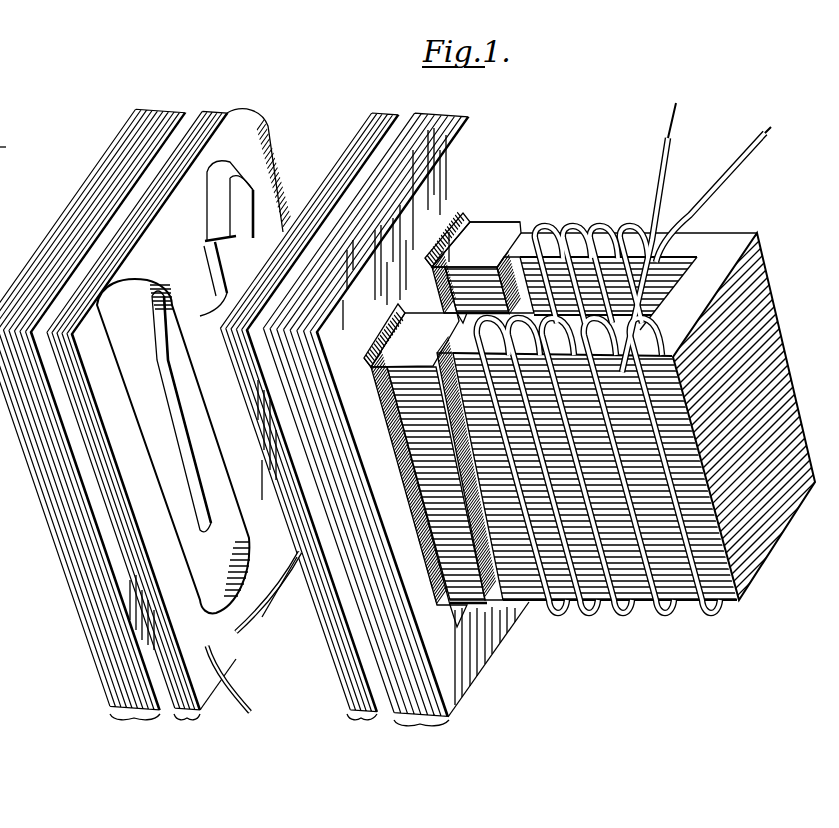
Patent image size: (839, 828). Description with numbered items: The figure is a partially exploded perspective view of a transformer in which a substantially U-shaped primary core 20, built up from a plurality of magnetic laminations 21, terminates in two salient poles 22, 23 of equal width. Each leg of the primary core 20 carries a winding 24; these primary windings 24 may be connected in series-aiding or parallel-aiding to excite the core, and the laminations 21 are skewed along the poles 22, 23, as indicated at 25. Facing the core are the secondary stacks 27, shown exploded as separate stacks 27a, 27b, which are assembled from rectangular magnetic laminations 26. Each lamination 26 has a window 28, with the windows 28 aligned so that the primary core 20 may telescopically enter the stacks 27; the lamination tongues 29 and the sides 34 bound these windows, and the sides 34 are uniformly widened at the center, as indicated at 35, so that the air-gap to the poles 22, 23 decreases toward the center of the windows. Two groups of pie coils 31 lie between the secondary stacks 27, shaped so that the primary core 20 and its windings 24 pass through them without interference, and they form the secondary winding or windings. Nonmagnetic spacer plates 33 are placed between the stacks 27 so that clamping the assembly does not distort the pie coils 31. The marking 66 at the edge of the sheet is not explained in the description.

The primary core 20 is at (569, 382).
The magnetic laminations 21 is at (760, 283).
The salient pole 22 is at (395, 367).
The salient pole 23 is at (490, 226).
The winding 24 is at (663, 603).
The skew 25 is at (430, 507).
The magnetic laminations 26 is at (350, 693).
The secondary stacks 27 is at (360, 723).
The lamination stack 27a is at (420, 727).
The lamination stack 27b is at (137, 721).
The windows 28 is at (383, 330).
The lamination tongues 29 is at (417, 300).
The pie coils 31 is at (255, 127).
The nonmagnetic spacer plates 33 is at (172, 414).
The sides 34 is at (343, 617).
The widened portion 35 is at (410, 477).
The frame member 66 is at (12, 149).